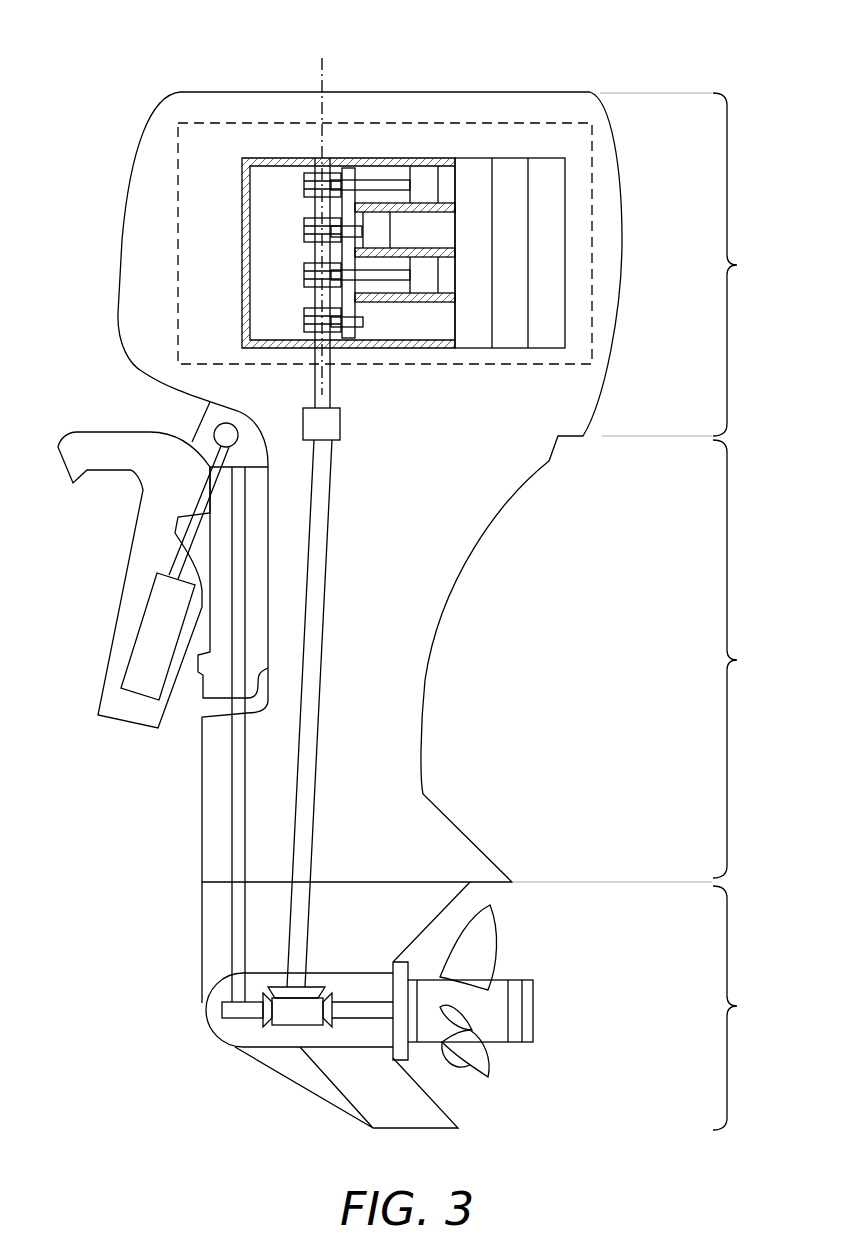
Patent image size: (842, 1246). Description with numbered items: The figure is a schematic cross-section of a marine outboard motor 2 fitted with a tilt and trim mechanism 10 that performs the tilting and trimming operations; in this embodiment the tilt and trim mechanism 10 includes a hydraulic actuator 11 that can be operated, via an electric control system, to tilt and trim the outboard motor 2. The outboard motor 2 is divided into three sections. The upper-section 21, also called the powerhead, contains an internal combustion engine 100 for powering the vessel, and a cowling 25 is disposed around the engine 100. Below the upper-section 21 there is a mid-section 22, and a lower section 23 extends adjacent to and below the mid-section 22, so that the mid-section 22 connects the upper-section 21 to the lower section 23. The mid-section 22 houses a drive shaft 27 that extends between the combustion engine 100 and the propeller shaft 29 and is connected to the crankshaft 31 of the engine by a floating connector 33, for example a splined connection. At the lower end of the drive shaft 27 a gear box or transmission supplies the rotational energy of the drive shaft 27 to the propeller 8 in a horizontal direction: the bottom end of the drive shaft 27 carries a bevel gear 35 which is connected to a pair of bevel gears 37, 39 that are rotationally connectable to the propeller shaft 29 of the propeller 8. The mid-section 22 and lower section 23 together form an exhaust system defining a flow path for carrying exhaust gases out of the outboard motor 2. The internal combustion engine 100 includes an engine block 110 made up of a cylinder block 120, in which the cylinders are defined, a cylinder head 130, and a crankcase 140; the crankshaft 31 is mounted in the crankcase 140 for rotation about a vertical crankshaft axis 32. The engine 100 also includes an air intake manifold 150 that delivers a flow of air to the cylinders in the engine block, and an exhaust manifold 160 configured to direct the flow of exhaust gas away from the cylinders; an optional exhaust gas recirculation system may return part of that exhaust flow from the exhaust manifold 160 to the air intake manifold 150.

The outboard motor 2 is at (403, 505).
The propeller 8 is at (500, 1010).
The tilt and trim mechanism 10 is at (138, 580).
The hydraulic actuator 11 is at (145, 665).
The upper-section 21 is at (688, 264).
The mid-section 22 is at (644, 661).
The lower section 23 is at (745, 1008).
The cowling 25 is at (620, 186).
The drive shaft 27 is at (317, 603).
The propeller shaft 29 is at (358, 1020).
The crankshaft 31 is at (330, 387).
The crankshaft axis 32 is at (325, 70).
The floating connector 33 is at (342, 426).
The bevel gear 35 is at (296, 990).
The bevel gear 37 is at (263, 1032).
The bevel gear 39 is at (335, 1010).
The internal combustion engine 100 is at (176, 150).
The engine block 110 is at (391, 231).
The cylinder block 120 is at (431, 345).
The cylinder head 130 is at (580, 197).
The crankcase 140 is at (267, 158).
The air intake manifold 150 is at (515, 330).
The exhaust manifold 160 is at (548, 305).